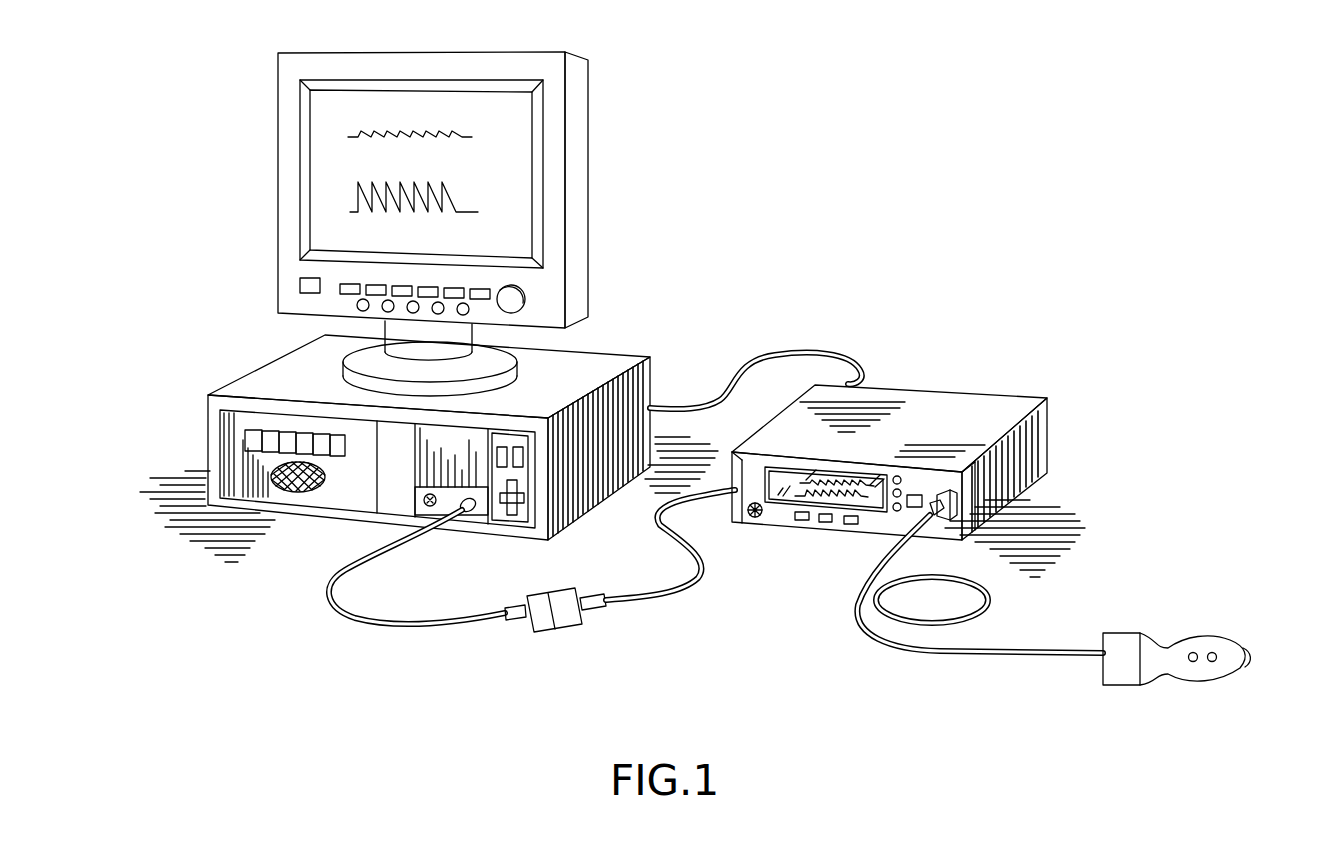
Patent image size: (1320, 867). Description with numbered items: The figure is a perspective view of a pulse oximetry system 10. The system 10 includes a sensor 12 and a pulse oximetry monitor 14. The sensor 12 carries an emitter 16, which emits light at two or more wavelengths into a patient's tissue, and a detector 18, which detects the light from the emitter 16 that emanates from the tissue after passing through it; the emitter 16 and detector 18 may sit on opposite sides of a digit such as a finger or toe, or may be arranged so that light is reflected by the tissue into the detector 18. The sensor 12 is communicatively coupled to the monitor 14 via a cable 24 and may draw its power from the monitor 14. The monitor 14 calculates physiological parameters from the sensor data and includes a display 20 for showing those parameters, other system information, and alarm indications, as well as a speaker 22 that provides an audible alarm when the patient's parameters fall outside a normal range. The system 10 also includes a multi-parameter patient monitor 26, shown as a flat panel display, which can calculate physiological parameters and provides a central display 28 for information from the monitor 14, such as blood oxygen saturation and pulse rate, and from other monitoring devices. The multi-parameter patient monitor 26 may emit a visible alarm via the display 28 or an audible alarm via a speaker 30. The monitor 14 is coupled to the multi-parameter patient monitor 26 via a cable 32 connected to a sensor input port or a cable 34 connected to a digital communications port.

The pulse oximetry system 10 is at (908, 170).
The sensor 12 is at (1199, 647).
The pulse oximetry monitor 14 is at (903, 476).
The emitter 16 is at (1193, 665).
The detector 18 is at (1213, 665).
The display 20 is at (790, 500).
The speaker 22 is at (753, 518).
The cable 24 is at (878, 642).
The multi-parameter patient monitor 26 is at (414, 224).
The central display 28 is at (333, 192).
The speaker 30 is at (298, 492).
The cable 32 is at (645, 606).
The cable 34 is at (802, 353).